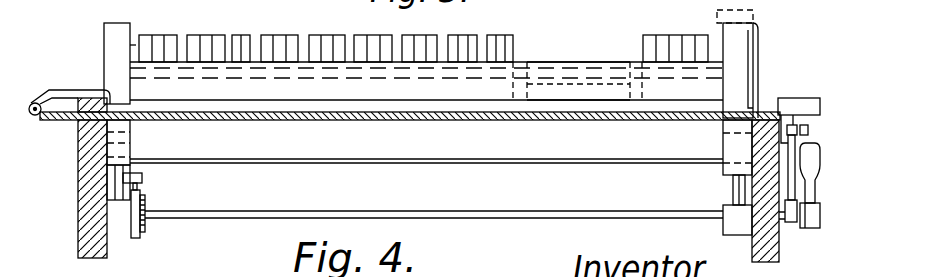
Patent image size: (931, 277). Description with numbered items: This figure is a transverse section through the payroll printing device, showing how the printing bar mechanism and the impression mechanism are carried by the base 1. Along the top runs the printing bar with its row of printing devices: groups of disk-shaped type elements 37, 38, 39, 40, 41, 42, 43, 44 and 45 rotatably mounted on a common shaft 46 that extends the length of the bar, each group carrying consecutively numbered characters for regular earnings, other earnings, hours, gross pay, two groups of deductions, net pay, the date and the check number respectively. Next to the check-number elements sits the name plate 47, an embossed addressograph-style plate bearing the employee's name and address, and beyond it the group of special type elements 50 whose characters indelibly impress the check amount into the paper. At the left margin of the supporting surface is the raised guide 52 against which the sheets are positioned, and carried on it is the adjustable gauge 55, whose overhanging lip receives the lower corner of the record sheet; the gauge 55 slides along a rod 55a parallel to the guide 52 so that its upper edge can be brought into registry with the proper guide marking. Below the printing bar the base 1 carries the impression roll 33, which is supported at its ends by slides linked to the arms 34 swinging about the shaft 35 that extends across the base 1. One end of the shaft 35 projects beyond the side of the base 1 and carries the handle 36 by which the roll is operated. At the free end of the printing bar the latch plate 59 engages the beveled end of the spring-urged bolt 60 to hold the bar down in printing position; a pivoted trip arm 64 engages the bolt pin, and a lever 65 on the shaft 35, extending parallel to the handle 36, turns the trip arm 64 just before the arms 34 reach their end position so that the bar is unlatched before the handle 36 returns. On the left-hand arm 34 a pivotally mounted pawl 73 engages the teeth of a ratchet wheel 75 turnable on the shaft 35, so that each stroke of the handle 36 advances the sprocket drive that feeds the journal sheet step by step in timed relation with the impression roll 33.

The base 1 is at (90, 228).
The impression roll 33 is at (542, 153).
The arms 34 is at (120, 190).
The shaft 35 is at (483, 215).
The handle 36 is at (809, 229).
The type elements 37 is at (172, 42).
The type elements 38 is at (220, 42).
The type elements 39 is at (243, 42).
The type elements 40 is at (292, 42).
The type elements 41 is at (334, 42).
The type elements 42 is at (378, 42).
The type elements 43 is at (418, 52).
The type elements 44 is at (463, 50).
The type elements 45 is at (500, 36).
The common shaft 46 is at (590, 85).
The name plate 47 is at (557, 92).
The special type elements 50 is at (695, 46).
The raised guide 52 is at (92, 100).
The adjustable gauge 55 is at (68, 91).
The rod 55a is at (36, 116).
The latch plate 59 is at (762, 112).
The bolt 60 is at (791, 127).
The trip arm 64 is at (800, 100).
The lever 65 is at (790, 158).
The pawl 73 is at (140, 188).
The ratchet wheel 75 is at (145, 222).